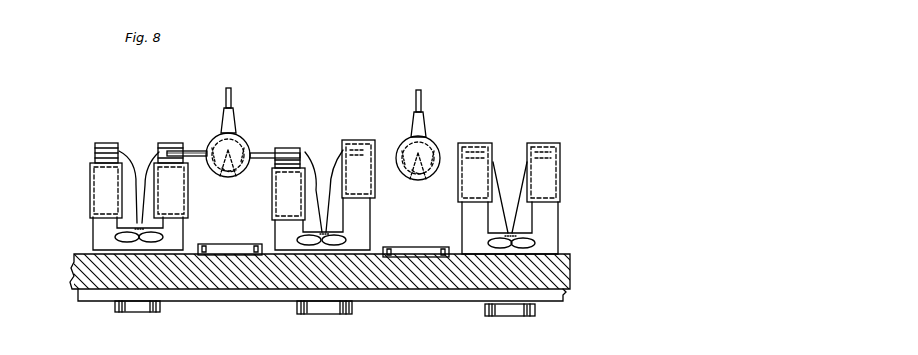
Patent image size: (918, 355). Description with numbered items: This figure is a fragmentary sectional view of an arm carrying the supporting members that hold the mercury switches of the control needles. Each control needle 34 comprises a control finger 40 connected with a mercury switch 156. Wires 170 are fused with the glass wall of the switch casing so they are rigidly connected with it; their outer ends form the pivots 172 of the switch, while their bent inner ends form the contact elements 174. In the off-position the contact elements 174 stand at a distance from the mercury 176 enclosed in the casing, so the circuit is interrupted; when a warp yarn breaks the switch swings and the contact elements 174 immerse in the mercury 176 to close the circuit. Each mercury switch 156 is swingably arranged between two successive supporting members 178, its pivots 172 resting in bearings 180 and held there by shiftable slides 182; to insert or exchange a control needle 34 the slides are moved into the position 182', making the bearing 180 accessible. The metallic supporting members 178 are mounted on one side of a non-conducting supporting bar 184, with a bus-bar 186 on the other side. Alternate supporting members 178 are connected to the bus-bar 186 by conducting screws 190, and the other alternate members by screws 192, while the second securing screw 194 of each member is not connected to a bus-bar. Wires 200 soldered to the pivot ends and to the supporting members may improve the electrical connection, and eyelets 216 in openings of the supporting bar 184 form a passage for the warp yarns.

The control needle 34 is at (242, 102).
The control finger 40 is at (226, 97).
The mercury switch 156 is at (212, 138).
The wires 170 is at (231, 178).
The pivots 172 is at (470, 145).
The contact elements 174 is at (430, 143).
The mercury 176 is at (237, 172).
The supporting members 178 is at (93, 228).
The bearings 180 is at (110, 144).
The shiftable slides 182 is at (477, 183).
The slide position 182' is at (171, 192).
The supporting bar 184 is at (570, 280).
The bus-bar 186 is at (432, 301).
The screws 190 is at (137, 312).
The screws 192 is at (307, 314).
The screw 194 is at (512, 232).
The wires 200 is at (140, 155).
The eyelets 216 is at (250, 246).